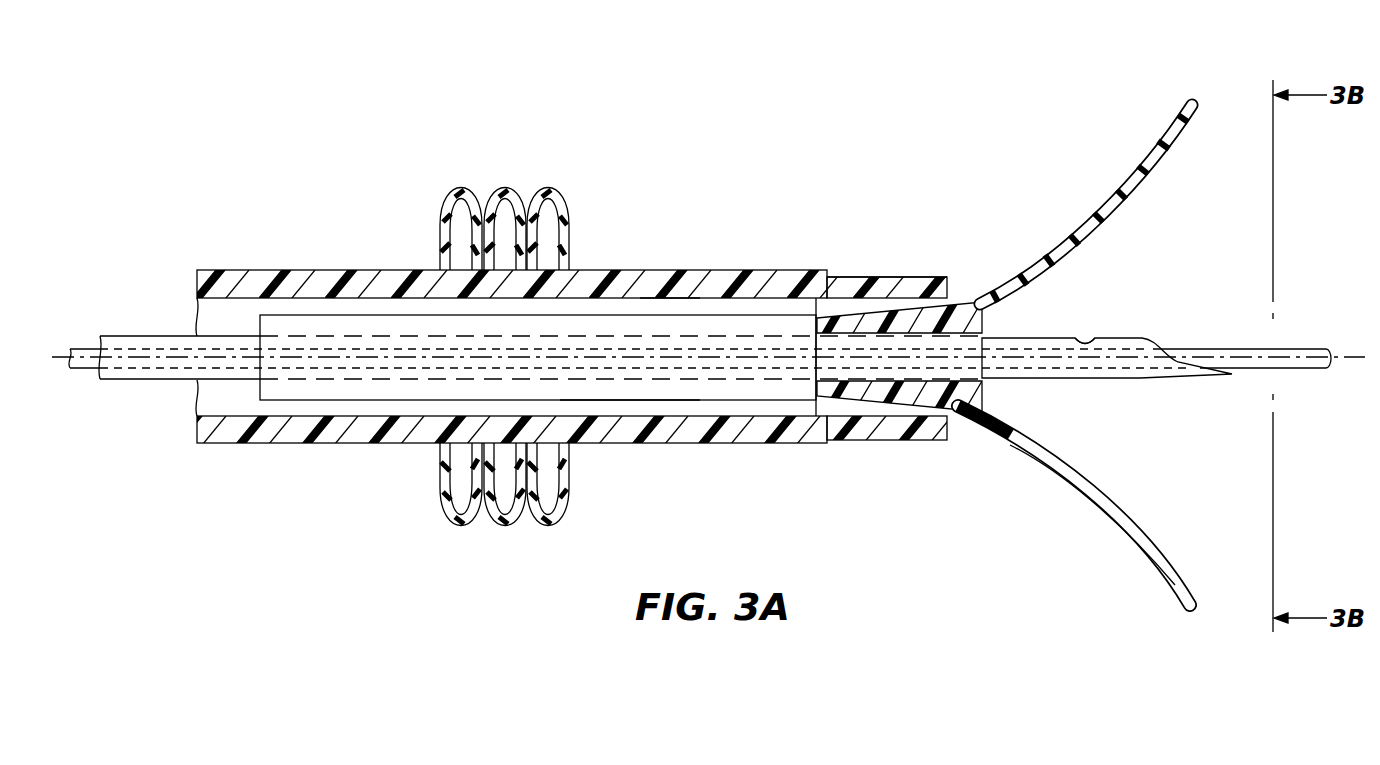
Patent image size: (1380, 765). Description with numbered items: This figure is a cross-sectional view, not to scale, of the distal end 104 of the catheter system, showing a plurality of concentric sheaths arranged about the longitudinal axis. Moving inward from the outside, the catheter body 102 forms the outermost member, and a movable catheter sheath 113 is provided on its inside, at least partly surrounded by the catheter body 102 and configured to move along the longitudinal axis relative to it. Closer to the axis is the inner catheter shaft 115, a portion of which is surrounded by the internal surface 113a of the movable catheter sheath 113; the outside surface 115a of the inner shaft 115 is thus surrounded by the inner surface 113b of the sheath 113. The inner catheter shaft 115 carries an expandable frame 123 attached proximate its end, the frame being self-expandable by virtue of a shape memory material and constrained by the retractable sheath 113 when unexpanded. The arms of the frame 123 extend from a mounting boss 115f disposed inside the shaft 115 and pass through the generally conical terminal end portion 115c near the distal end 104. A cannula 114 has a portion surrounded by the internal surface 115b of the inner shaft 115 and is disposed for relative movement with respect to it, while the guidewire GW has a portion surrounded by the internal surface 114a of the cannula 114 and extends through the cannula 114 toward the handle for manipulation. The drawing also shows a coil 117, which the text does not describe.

The catheter body 102 is at (626, 270).
The distal end 104 is at (1208, 438).
The movable catheter sheath 113 is at (895, 290).
The internal surface of the movable catheter sheath 113a is at (843, 275).
The inner surface of the sheath 113b is at (668, 303).
The cannula 114 is at (1067, 379).
The internal surface of the cannula 114a is at (1088, 338).
The inner catheter shaft 115 is at (795, 400).
The outside surface of the inner shaft 115a is at (633, 403).
The internal surface of the inner shaft 115b is at (687, 394).
The terminal end portion 115c is at (1057, 329).
The mounting boss 115f is at (884, 382).
The coil 117 is at (447, 223).
The expandable frame 123 is at (1053, 238).
The guidewire GW is at (1215, 347).